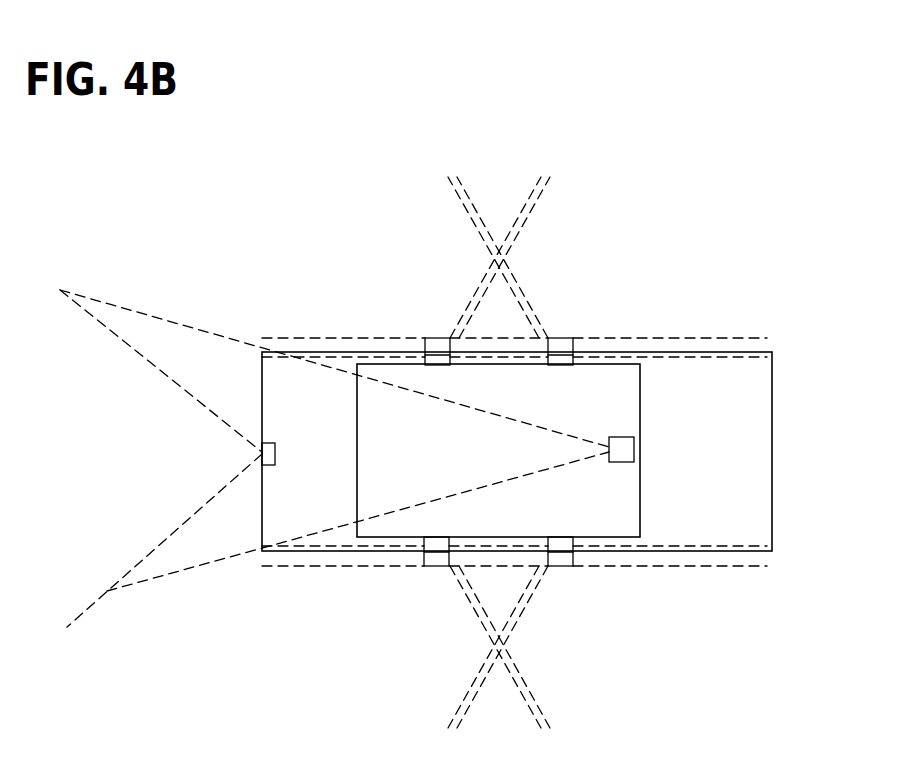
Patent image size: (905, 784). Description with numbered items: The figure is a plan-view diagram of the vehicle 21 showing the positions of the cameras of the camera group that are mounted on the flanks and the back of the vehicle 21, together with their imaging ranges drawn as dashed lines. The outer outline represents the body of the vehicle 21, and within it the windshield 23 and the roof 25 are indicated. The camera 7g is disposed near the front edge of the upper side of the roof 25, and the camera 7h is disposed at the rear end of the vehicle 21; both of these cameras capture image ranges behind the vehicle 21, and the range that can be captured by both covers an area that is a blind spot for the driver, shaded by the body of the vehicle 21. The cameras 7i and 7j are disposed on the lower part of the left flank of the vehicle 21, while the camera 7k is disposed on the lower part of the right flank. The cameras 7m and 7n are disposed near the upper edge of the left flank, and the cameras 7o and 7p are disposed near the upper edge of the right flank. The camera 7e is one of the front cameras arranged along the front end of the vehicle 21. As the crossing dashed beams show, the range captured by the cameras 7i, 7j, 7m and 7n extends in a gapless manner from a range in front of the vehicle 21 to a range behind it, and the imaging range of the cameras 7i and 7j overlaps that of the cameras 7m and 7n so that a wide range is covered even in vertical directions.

The vehicle 21 is at (773, 399).
The windshield 23 is at (641, 491).
The roof 25 is at (610, 378).
The camera 7e is at (433, 567).
The camera 7g is at (630, 443).
The camera 7h is at (276, 452).
The camera 7i is at (556, 338).
The camera 7j is at (432, 338).
The camera 7k is at (562, 567).
The camera 7m is at (557, 366).
The camera 7n is at (437, 366).
The camera 7o is at (560, 540).
The camera 7p is at (433, 540).